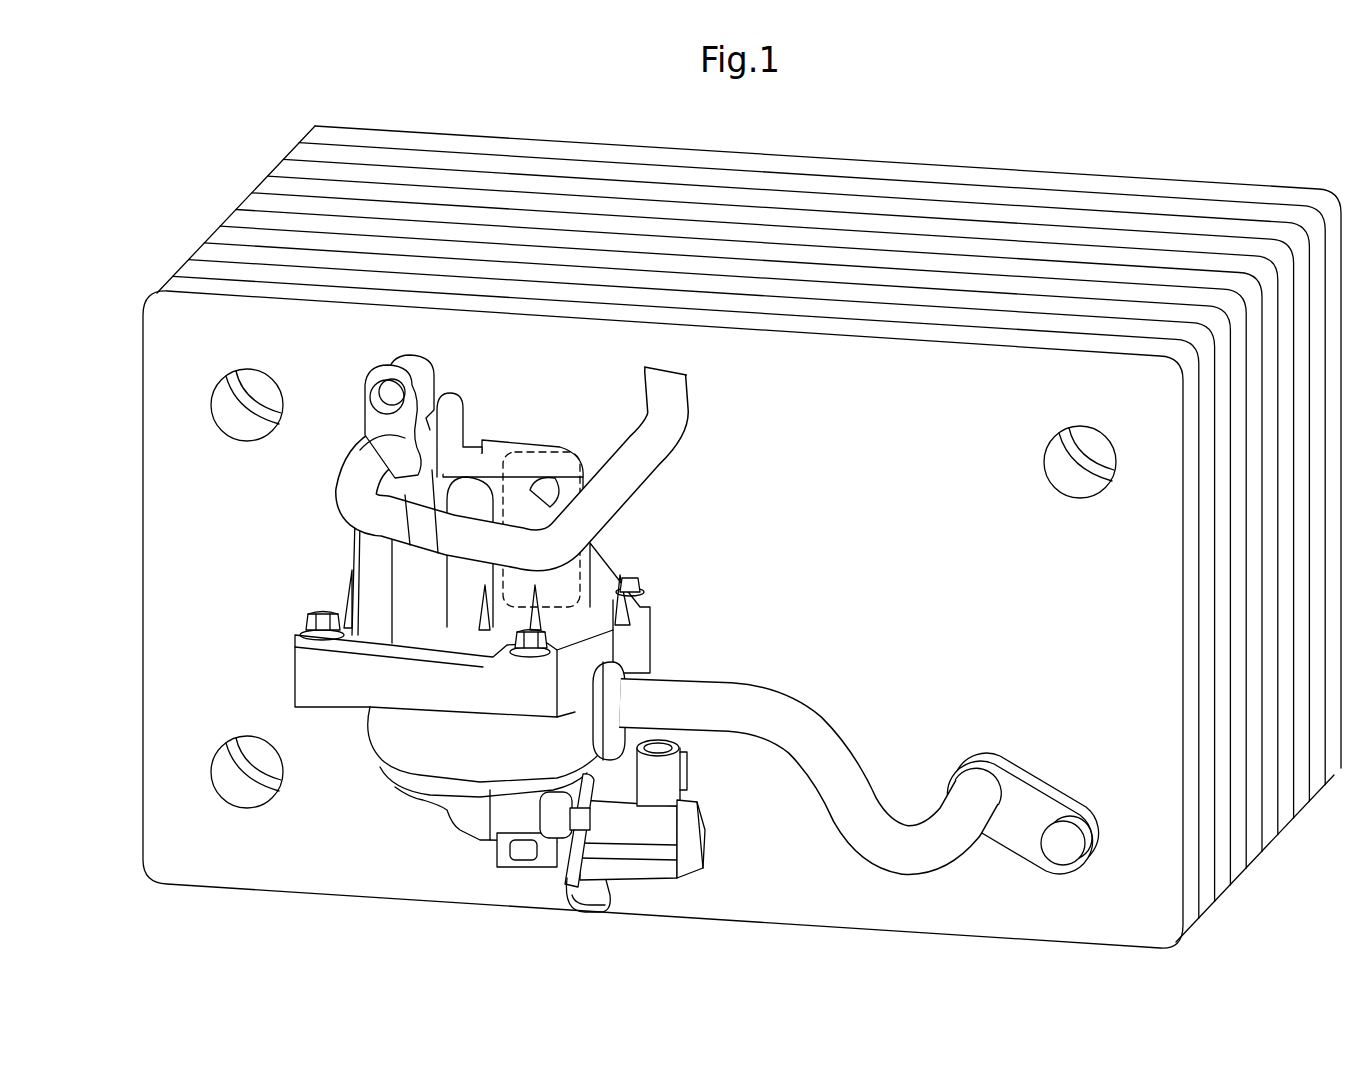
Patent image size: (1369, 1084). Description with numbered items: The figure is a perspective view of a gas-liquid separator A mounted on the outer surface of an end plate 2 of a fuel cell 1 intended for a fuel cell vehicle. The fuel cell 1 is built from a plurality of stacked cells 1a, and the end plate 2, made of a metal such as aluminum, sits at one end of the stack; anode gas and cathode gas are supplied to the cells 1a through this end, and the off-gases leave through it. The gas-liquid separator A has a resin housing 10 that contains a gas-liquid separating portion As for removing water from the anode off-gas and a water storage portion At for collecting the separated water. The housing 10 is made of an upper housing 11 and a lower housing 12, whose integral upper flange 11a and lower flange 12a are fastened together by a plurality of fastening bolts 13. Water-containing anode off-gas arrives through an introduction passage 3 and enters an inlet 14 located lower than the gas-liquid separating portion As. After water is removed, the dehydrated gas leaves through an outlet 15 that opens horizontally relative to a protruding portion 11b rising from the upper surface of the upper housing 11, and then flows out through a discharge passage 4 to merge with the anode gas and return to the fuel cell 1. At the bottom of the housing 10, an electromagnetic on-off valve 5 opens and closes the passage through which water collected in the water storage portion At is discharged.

The fuel cell 1 is at (132, 190).
The cells for a fuel cell 1a is at (283, 167).
The end plate 2 is at (162, 368).
The introduction passage 3 is at (827, 727).
The discharge passage 4 is at (610, 468).
The electromagnetic on-off valve 5 is at (638, 868).
The housing 10 is at (350, 537).
The upper housing 11 is at (408, 563).
The upper flange 11a is at (648, 607).
The protruding portion 11b is at (412, 380).
The lower housing 12 is at (380, 718).
The lower flange 12a is at (645, 623).
The fastening bolts 13 is at (300, 630).
The inlet 14 is at (632, 696).
The outlet 15 is at (365, 448).
The gas-liquid separator A is at (252, 550).
The gas-liquid separating portion As is at (537, 450).
The water storage portion At is at (393, 786).